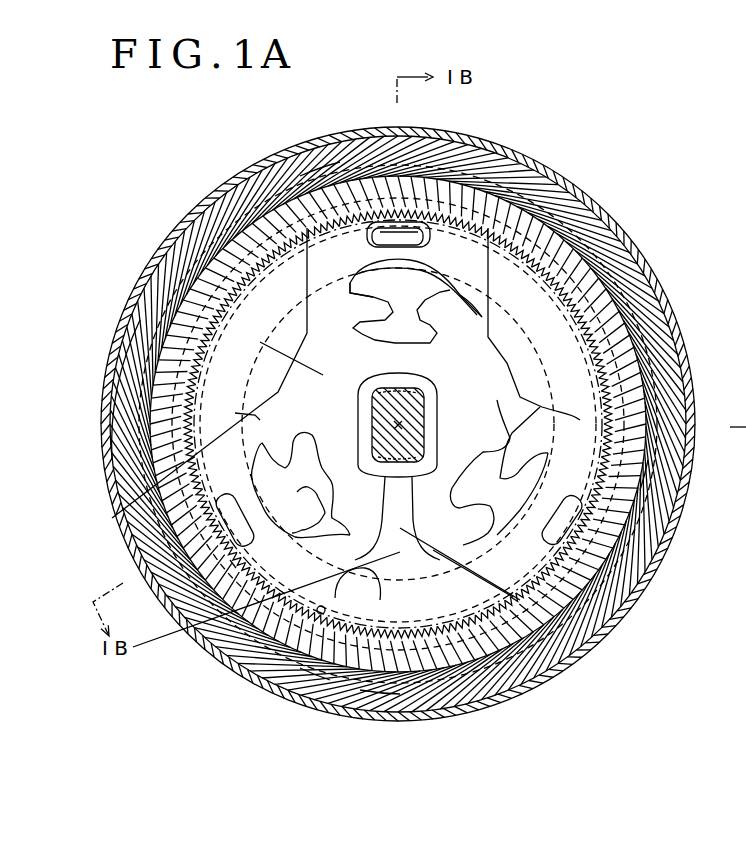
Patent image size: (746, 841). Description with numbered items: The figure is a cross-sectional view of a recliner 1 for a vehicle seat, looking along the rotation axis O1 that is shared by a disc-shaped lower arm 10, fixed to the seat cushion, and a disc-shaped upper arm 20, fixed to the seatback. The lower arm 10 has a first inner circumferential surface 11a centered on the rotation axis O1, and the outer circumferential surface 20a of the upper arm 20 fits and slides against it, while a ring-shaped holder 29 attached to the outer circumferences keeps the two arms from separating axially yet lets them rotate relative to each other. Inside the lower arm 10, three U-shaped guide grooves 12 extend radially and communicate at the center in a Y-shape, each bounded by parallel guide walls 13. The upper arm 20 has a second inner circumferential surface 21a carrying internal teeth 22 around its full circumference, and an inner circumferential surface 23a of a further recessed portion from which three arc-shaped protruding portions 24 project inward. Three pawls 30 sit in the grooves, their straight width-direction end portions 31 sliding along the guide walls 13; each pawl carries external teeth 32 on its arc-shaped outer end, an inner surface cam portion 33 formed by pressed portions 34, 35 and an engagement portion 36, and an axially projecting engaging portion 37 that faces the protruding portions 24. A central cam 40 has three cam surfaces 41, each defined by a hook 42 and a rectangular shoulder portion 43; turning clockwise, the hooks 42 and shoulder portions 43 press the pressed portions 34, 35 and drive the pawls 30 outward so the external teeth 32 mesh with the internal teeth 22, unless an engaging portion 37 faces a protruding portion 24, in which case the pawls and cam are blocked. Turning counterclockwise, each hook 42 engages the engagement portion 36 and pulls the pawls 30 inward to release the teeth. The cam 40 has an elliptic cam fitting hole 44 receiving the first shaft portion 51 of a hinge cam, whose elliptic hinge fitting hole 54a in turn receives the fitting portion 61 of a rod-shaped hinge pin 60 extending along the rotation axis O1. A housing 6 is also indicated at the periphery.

The recliner 1 is at (609, 138).
The housing 6 is at (738, 381).
The lower arm 10 is at (497, 173).
The first inner circumferential surface 11a is at (131, 316).
The guide groove 12 is at (536, 182).
The guide wall 13 is at (312, 284).
The upper arm 20 is at (463, 152).
The outer circumferential surface 20a is at (322, 158).
The second inner circumferential surface 21a is at (279, 712).
The internal teeth 22 is at (268, 690).
The inner circumferential surface 23a is at (377, 696).
The protruding portion 24 is at (218, 196).
The holder 29 is at (688, 448).
The pawl 30 is at (587, 210).
The width-direction end portion 31 is at (276, 166).
The external teeth 32 is at (363, 134).
The inner surface cam portion 33 is at (360, 333).
The pressed portion 34 is at (262, 426).
The pressed portion 35 is at (347, 527).
The engagement portion 36 is at (250, 655).
The engaging portion 37 is at (430, 144).
The cam 40 is at (490, 387).
The cam surface 41 is at (407, 340).
The hook 42 is at (477, 300).
The shoulder portion 43 is at (355, 328).
The cam fitting hole 44 is at (277, 349).
The first shaft portion 51 is at (410, 584).
The hinge fitting hole 54a is at (358, 425).
The hinge pin 60 is at (233, 564).
The fitting portion 61 is at (340, 586).
The rotation axis O1 is at (412, 415).